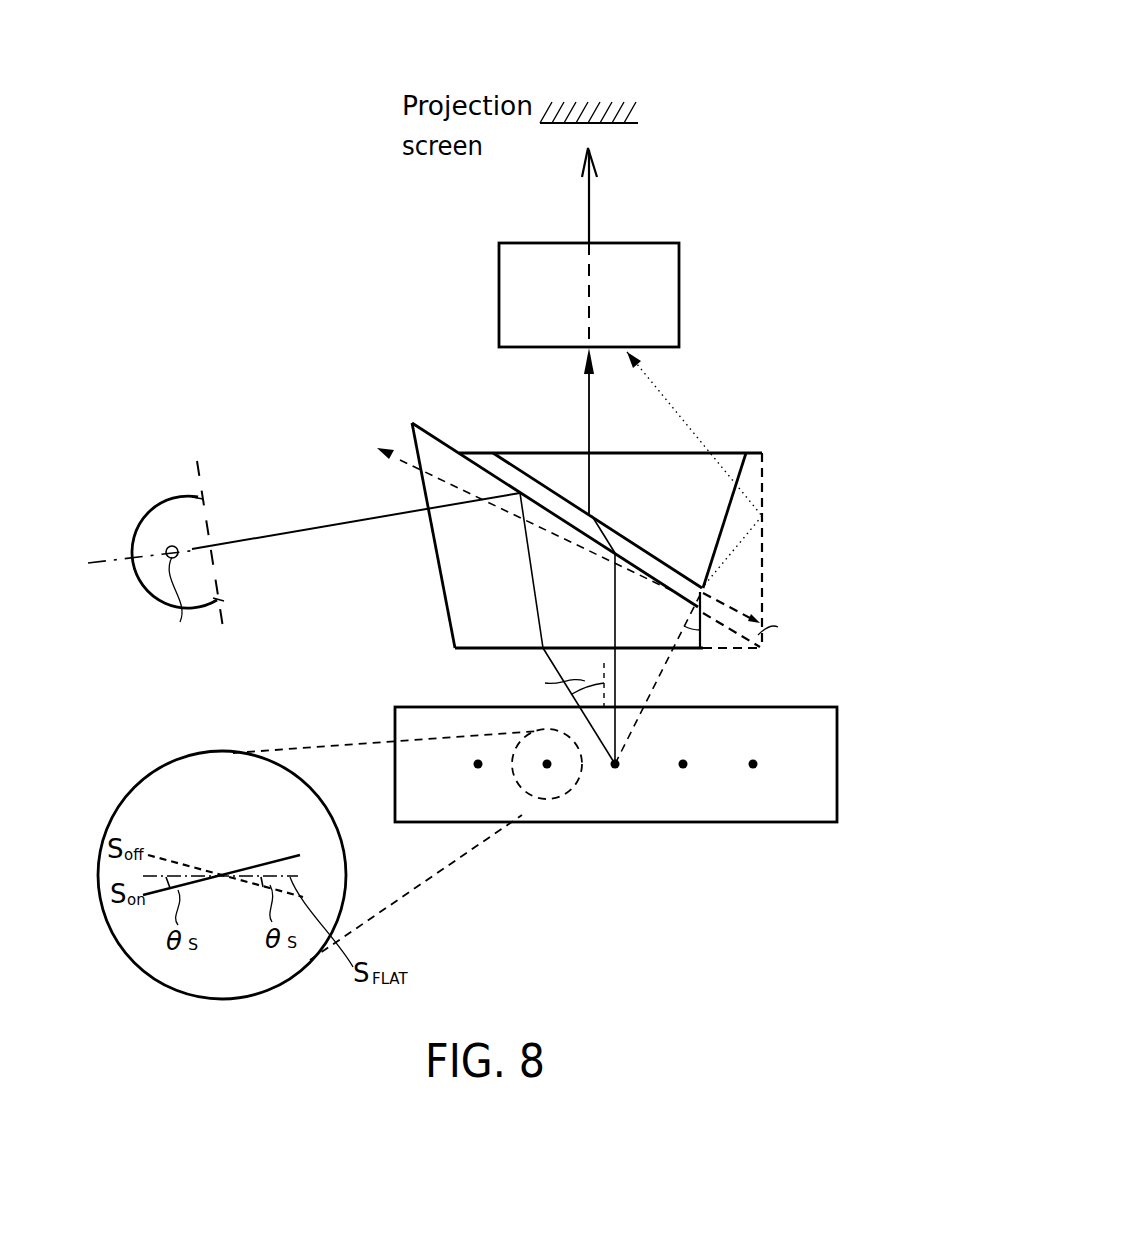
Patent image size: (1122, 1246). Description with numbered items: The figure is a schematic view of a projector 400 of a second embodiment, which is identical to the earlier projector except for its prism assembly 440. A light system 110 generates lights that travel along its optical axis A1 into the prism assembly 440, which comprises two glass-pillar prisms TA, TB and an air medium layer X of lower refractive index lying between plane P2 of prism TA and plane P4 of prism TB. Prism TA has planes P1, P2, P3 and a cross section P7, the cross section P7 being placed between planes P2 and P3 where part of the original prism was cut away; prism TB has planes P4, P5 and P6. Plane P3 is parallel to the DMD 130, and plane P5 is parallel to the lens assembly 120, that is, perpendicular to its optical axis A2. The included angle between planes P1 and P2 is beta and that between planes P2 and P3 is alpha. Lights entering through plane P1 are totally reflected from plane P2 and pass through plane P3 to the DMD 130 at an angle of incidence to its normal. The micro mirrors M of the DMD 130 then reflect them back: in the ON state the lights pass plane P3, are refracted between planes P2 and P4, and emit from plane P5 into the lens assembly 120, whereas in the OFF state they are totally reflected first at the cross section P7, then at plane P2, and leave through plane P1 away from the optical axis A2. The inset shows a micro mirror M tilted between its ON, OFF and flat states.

The projector 400 is at (745, 70).
The light system 110 is at (160, 495).
The lens assembly 120 is at (660, 243).
The DMD 130 is at (813, 707).
The prism assembly 440 is at (810, 462).
The optical axis A1 is at (90, 565).
The optical axis A2 is at (590, 310).
The prism TA is at (487, 582).
The prism TB is at (723, 454).
The plane P1 is at (430, 537).
The plane P2 is at (593, 546).
The plane P3 is at (473, 648).
The plane P4 is at (607, 524).
The plane P5 is at (598, 453).
The plane P6 is at (706, 573).
The cross section P7 is at (695, 633).
The micro mirror M is at (237, 848).